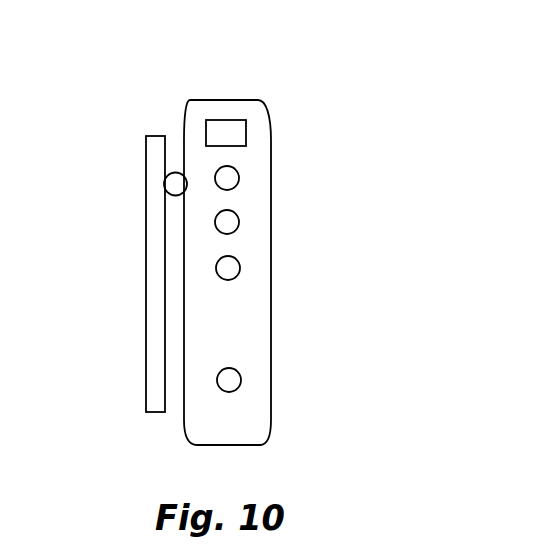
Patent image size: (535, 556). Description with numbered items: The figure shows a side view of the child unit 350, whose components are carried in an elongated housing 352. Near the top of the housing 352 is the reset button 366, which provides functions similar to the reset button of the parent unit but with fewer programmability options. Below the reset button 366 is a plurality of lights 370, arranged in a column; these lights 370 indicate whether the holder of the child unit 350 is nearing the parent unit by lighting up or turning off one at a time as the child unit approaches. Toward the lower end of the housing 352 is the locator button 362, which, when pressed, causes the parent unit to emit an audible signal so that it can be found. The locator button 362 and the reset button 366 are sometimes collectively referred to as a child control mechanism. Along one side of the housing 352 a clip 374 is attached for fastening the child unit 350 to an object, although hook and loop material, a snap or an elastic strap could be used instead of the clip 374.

The child unit 350 is at (376, 117).
The housing 352 is at (272, 352).
The locator button 362 is at (233, 381).
The reset button 366 is at (230, 120).
The plurality of lights 370 is at (239, 178).
The clip 374 is at (147, 205).